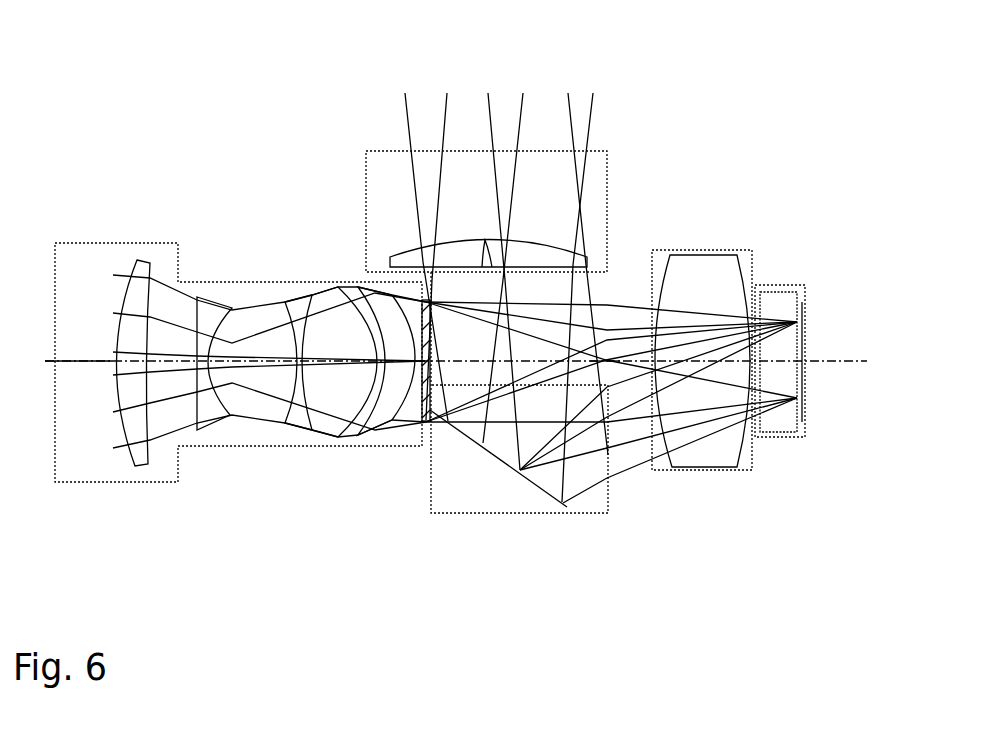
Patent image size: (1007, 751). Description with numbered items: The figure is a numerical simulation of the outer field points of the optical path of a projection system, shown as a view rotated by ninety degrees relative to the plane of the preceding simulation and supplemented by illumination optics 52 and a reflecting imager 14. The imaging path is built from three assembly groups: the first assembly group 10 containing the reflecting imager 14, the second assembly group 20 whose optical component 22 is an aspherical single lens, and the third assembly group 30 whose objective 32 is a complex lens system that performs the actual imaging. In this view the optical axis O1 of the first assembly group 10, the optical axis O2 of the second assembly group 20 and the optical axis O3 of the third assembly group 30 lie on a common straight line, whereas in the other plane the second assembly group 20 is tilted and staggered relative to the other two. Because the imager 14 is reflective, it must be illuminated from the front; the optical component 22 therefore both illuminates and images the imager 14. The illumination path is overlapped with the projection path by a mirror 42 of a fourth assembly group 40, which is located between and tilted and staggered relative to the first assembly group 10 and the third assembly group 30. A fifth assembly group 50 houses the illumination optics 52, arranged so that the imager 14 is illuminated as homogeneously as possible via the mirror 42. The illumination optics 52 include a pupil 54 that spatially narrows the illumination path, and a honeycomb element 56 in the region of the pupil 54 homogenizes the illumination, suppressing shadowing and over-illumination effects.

The first assembly group 10 is at (806, 425).
The reflecting imager 14 is at (806, 348).
The second assembly group 20 is at (727, 450).
The optical component 22 is at (703, 300).
The third assembly group 30 is at (237, 447).
The objective 32 is at (244, 352).
The fourth assembly group 40 is at (430, 469).
The mirror 42 is at (500, 453).
The fifth assembly group 50 is at (367, 176).
The illumination optics 52 is at (533, 257).
The pupil 54 is at (388, 262).
The honeycomb element 56 is at (475, 240).
The optical axis of the first assembly group O1 is at (767, 360).
The optical axis of the second assembly group O2 is at (605, 358).
The optical axis of the third assembly group O3 is at (83, 360).